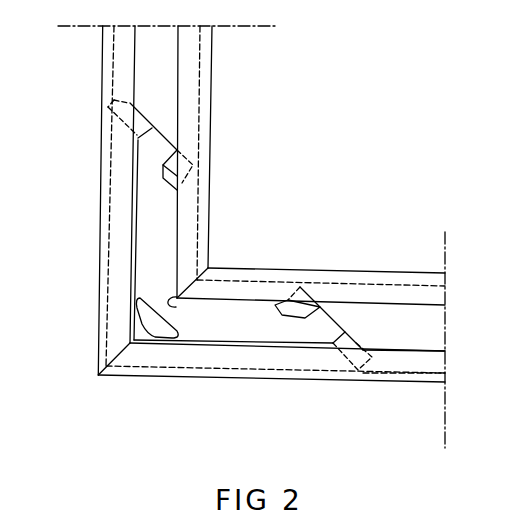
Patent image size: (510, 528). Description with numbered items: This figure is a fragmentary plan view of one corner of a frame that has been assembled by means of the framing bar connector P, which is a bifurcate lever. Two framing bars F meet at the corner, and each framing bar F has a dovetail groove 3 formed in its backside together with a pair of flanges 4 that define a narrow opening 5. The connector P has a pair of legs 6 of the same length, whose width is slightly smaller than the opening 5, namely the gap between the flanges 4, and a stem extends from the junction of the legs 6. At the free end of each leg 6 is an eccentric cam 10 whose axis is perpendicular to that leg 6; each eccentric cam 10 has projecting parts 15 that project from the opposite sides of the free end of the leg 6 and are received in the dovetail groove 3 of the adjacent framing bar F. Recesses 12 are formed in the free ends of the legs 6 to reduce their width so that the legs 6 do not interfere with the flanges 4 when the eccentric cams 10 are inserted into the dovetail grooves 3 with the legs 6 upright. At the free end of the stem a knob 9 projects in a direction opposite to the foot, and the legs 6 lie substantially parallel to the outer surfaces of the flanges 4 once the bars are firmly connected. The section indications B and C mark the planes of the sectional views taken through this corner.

The dovetail groove 3 is at (175, 116).
The flanges 4 is at (413, 300).
The opening 5 is at (427, 335).
The legs 6 is at (145, 262).
The knob 9 is at (152, 333).
The eccentric cams 10 is at (160, 130).
The recesses 12 is at (283, 310).
The projecting parts 15 is at (128, 103).
The framing bar F is at (212, 70).
The framing bar connector P is at (247, 342).
The section line B- B is at (87, 70).
The section line C- C is at (88, 250).